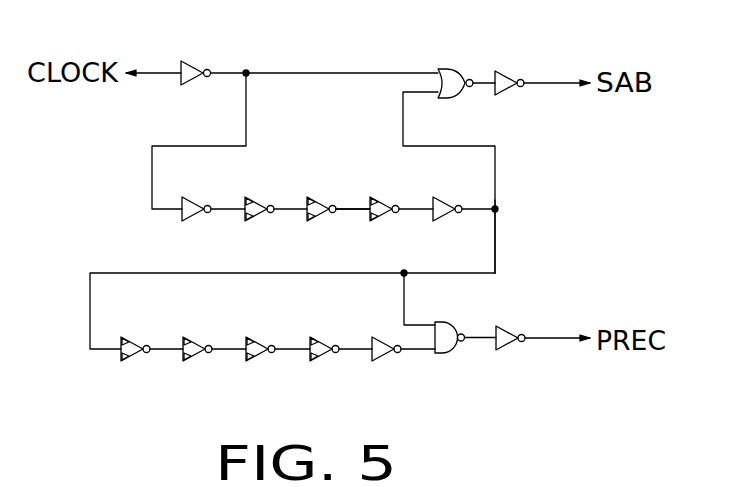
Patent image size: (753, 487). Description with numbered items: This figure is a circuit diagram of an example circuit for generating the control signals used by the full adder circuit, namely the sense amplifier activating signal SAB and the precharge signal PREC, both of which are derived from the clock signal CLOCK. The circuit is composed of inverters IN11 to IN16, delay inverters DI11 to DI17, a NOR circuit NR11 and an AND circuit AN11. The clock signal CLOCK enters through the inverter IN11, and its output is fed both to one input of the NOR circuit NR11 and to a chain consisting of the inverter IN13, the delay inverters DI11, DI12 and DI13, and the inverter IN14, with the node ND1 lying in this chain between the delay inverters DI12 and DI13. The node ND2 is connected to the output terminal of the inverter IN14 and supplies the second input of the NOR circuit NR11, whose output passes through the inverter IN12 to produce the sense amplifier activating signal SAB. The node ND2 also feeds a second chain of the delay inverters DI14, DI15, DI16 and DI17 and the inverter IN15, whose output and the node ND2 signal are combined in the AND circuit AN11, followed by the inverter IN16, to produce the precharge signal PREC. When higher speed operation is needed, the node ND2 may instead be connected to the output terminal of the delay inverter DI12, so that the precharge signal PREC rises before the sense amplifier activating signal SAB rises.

The inverter IN11 is at (193, 61).
The NOR circuit NR11 is at (452, 68).
The inverter IN12 is at (506, 72).
The inverter IN13 is at (196, 199).
The delay inverter DI11 is at (257, 199).
The delay inverter DI12 is at (321, 199).
The delay inverter DI13 is at (383, 199).
The inverter IN14 is at (446, 199).
The node ND1 is at (345, 212).
The node ND2 is at (497, 238).
The delay inverter DI14 is at (127, 362).
The delay inverter DI15 is at (190, 362).
The delay inverter DI16 is at (254, 362).
The delay inverter DI17 is at (320, 362).
The inverter IN15 is at (381, 362).
The AND circuit AN11 is at (450, 355).
The inverter IN16 is at (506, 327).